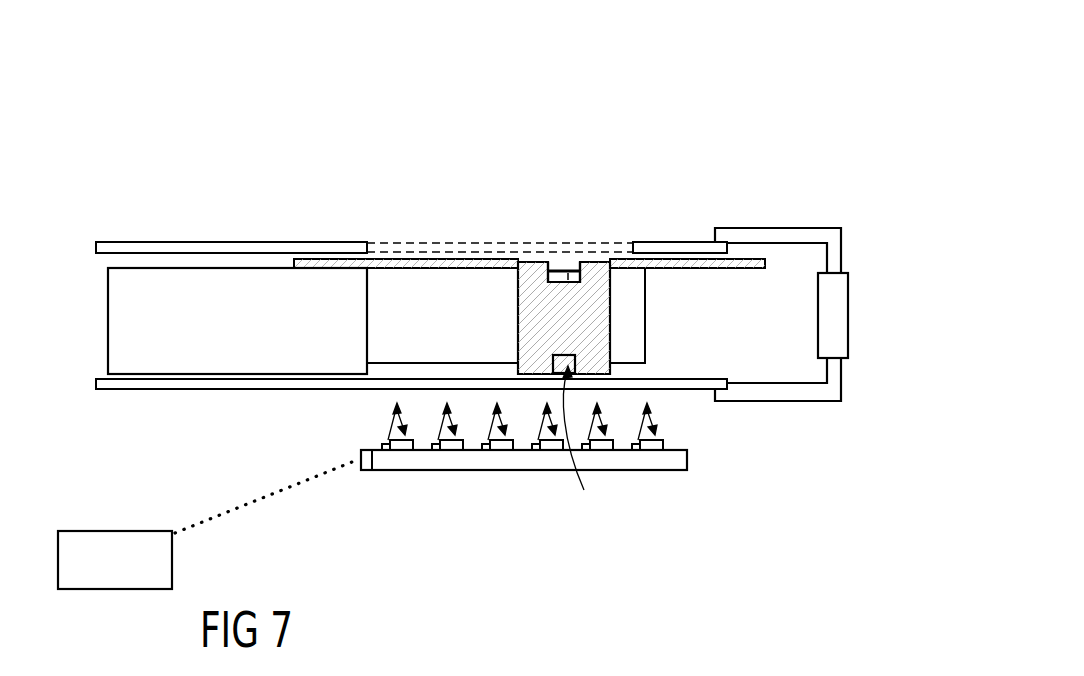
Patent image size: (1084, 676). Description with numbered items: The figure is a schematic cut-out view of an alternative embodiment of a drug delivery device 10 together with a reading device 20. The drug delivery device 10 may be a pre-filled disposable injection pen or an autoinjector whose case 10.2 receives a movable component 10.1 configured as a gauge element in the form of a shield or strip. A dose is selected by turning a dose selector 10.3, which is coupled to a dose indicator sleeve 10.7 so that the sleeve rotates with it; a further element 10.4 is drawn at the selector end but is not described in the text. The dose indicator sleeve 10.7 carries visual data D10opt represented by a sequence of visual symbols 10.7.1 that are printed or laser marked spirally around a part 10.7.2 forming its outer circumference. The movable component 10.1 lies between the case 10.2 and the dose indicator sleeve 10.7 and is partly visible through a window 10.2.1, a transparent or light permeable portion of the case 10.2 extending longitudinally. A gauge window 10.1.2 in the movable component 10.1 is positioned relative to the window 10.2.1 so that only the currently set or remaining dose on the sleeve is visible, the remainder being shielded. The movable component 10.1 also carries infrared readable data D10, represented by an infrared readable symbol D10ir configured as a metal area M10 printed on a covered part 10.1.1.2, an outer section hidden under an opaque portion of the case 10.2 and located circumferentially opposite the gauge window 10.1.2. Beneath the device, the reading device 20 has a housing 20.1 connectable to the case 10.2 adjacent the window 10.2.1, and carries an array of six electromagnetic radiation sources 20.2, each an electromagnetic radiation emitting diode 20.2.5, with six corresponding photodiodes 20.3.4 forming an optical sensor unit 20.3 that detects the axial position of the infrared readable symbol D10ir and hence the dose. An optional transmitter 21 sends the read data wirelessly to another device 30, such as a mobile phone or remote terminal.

The drug delivery device 10 is at (184, 156).
The window 10.2.1 is at (393, 243).
The movable component 10.1 is at (483, 259).
The dose indicator sleeve 10.7 is at (137, 352).
The visual symbols 10.7.1 is at (550, 262).
The part of the dose indicator sleeve 10.7.2 is at (705, 208).
The visual data D10opt is at (580, 264).
The gauge window 10.1.2 is at (567, 272).
The covered part 10.1.1.2 is at (573, 372).
The infrared readable symbol D10ir is at (568, 374).
The metal area M10 is at (709, 491).
The case 10.2 is at (207, 383).
The dose selector 10.3 is at (783, 395).
The connection element 10.4 is at (840, 335).
The infrared readable data D10 is at (586, 446).
The reading device 20 is at (528, 474).
The housing 20.1 is at (670, 470).
The transmitter 21 is at (358, 455).
The electromagnetic radiation sources 20.2 is at (323, 504).
The electromagnetic radiation emitting diode 20.2.5 is at (384, 446).
The optical sensor unit 20.3 is at (425, 519).
The photodiodes 20.3.4 is at (402, 447).
The another device 30 is at (131, 576).